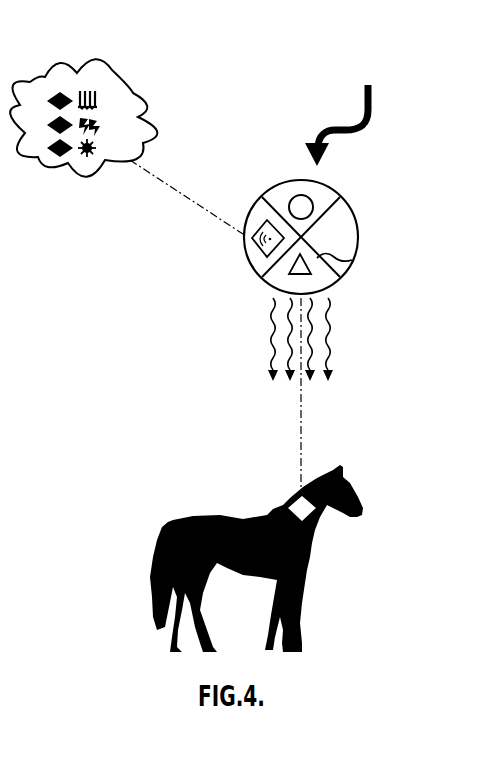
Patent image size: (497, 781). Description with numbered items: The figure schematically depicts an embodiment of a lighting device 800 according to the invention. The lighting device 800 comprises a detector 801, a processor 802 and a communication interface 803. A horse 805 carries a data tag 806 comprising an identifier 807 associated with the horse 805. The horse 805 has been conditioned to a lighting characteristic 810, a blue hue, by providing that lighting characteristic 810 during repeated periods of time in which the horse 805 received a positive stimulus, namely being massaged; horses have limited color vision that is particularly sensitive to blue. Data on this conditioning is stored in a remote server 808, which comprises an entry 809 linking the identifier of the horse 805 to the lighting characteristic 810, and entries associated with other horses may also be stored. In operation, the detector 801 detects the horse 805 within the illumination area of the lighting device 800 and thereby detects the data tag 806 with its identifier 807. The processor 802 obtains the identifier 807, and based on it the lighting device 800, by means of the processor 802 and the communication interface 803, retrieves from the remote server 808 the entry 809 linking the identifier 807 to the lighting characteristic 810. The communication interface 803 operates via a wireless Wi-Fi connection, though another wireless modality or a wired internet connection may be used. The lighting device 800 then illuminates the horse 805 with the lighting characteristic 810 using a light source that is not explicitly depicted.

The lighting device 800 is at (408, 72).
The detector 801 is at (300, 226).
The processor 802 is at (296, 198).
The communication interface 803 is at (250, 262).
The horse 805 is at (241, 541).
The data tag 806 is at (248, 476).
The identifier 807 is at (288, 500).
The remote server 808 is at (145, 105).
The entry 809 is at (66, 87).
The lighting characteristic 810 is at (333, 342).